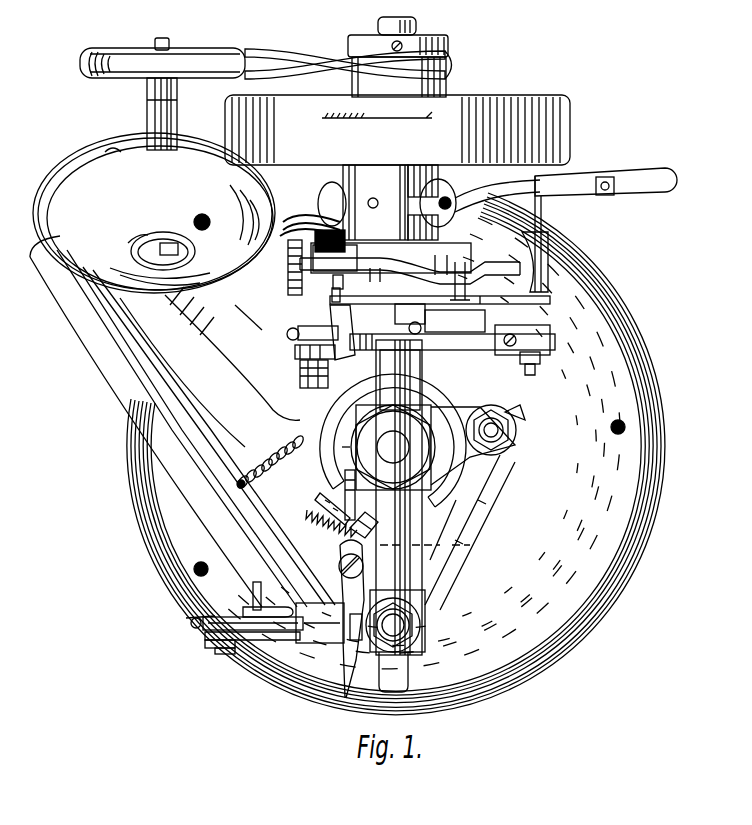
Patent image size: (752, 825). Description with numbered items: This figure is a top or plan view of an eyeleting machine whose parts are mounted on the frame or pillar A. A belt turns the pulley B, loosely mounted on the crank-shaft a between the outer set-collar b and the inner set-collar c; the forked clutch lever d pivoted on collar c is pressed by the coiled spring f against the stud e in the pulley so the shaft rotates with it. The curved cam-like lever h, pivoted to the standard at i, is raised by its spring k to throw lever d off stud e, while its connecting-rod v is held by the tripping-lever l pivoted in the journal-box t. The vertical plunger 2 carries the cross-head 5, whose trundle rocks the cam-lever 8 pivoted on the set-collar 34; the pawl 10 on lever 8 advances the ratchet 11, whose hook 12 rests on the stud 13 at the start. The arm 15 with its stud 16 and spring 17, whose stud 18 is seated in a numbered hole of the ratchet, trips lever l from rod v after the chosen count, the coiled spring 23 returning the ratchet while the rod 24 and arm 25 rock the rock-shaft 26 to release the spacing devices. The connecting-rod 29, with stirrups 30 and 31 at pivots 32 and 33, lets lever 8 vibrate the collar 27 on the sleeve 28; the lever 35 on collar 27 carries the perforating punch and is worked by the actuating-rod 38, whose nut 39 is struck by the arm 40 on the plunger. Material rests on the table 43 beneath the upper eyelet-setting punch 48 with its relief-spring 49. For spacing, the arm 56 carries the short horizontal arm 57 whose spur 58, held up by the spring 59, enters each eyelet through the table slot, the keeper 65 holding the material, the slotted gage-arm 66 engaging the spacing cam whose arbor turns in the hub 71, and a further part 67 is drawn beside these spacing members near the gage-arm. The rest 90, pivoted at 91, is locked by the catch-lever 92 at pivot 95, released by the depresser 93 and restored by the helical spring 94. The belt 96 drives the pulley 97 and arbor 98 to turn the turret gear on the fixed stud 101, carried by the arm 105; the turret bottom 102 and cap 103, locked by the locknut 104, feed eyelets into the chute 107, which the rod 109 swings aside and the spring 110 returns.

The frame or pillar A is at (396, 454).
The pulley B is at (397, 130).
The crank-shaft a is at (397, 17).
The outer set-collar b is at (398, 66).
The inner set-collar c is at (408, 222).
The forked clutch lever d is at (387, 202).
The stud e is at (497, 190).
The coiled spring f is at (599, 191).
The curved or cam-like lever h is at (606, 173).
The pivot i is at (294, 267).
The spring k is at (312, 226).
The tripping-lever l is at (535, 262).
The journal-box t is at (391, 257).
The connecting-rod v is at (542, 215).
The vertical plunger 2 is at (393, 447).
The cross-head 5 is at (399, 497).
The cam-lever 8 is at (455, 366).
The pawl 10 is at (469, 305).
The ratchet 11 is at (440, 298).
The hook or projection 12 is at (332, 298).
The stud 13 is at (330, 287).
The arm 15 is at (410, 272).
The stud 16 is at (326, 317).
The spring 17 is at (429, 270).
The stud 18 is at (472, 292).
The coiled spring 23 is at (410, 313).
The rod 24 is at (316, 334).
The arm 25 is at (290, 324).
The rock-shaft 26 is at (381, 275).
The collar 27 is at (442, 530).
The sleeve 28 is at (347, 437).
The connecting-rod 29 is at (455, 319).
The stirrup 30 is at (522, 334).
The stirrup 31 is at (424, 327).
The pivot 32 is at (530, 365).
The pivot 33 is at (342, 332).
The set-collar 34 is at (392, 440).
The lever 35 is at (470, 532).
The actuating-rod 38 is at (491, 430).
The nut 39 is at (516, 436).
The arm 40 is at (473, 446).
The table 43 is at (320, 624).
The upper eyelet-setting punch 48 is at (395, 621).
The relief-spring 49 is at (393, 672).
The arm 56 is at (208, 642).
The short horizontal arm 57 is at (253, 623).
The spur 58 is at (357, 629).
The spring 59 is at (190, 622).
The keeper 65 is at (286, 599).
The slotted gage-arm 66 is at (252, 644).
The plate 67 is at (222, 654).
The hub 71 is at (253, 600).
The rest or support 90 is at (348, 668).
The pivot 91 is at (338, 567).
The catch-lever 92 is at (410, 528).
The depresser 93 is at (356, 508).
The helical spring 94 is at (331, 528).
The pivot 95 is at (326, 504).
The belt 96 is at (348, 64).
The pulley 97 is at (162, 91).
The arbor 98 is at (173, 36).
The fixed stud 101 is at (163, 251).
The bottom of the turret 102 is at (154, 213).
The cap of the turret 103 is at (160, 218).
The locknut 104 is at (130, 242).
The arm 105 is at (210, 367).
The chute 107 is at (150, 383).
The rod 109 is at (278, 325).
The spring 110 is at (271, 467).